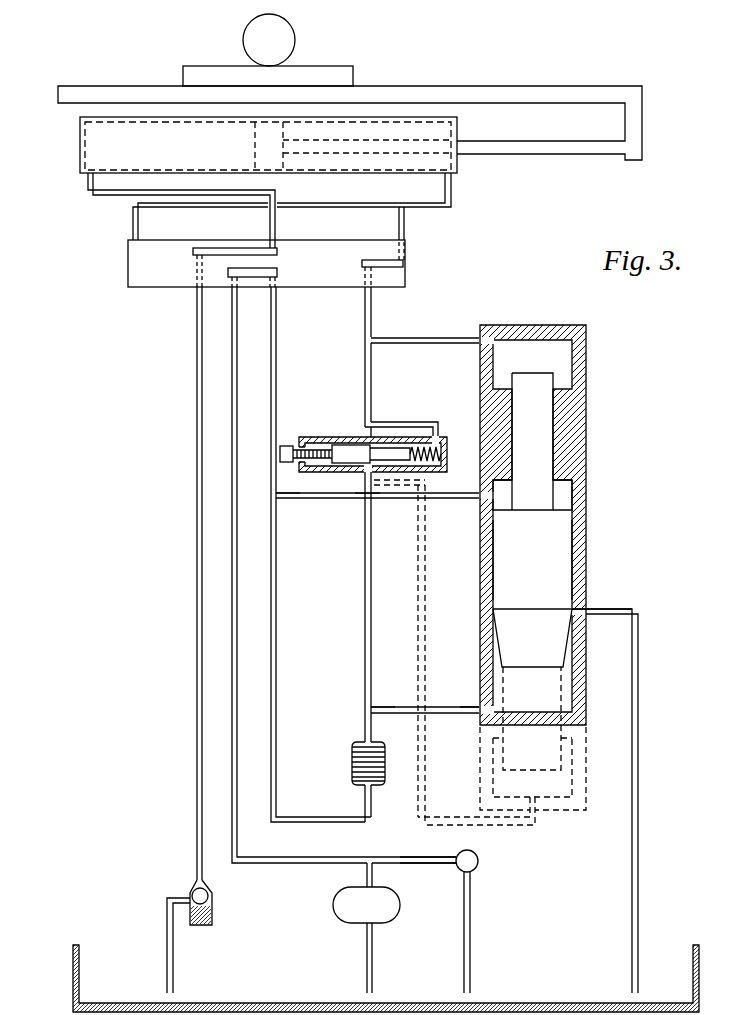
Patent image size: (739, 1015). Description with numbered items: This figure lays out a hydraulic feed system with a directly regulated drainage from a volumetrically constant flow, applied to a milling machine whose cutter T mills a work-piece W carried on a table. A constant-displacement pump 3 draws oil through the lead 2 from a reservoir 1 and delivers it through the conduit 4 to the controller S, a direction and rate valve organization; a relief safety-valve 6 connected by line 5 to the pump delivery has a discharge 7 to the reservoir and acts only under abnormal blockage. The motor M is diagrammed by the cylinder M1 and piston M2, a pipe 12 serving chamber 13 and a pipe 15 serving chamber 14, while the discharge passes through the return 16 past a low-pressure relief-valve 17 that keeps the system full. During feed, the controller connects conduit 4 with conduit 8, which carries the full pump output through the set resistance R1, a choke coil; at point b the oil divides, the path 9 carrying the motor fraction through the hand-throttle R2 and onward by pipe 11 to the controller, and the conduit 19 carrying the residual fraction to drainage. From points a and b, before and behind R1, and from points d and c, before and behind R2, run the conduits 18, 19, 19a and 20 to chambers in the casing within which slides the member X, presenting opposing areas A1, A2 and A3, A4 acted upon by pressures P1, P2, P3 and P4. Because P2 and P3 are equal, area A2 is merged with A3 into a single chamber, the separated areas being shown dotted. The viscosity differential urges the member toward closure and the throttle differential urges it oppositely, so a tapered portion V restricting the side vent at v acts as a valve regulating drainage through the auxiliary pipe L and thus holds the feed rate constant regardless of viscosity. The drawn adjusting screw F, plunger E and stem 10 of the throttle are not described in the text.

The cutter T is at (294, 34).
The work-piece W is at (357, 70).
The cylinder M1 is at (78, 131).
The motor M is at (70, 161).
The chamber 14 is at (190, 146).
The piston M2 is at (271, 138).
The chamber 13 is at (343, 163).
The pipe 15 is at (103, 197).
The pipe 12 is at (418, 209).
The controller S is at (126, 263).
The return 16 is at (195, 332).
The conduit 4 is at (230, 538).
The conduit 8 is at (278, 393).
The pressure P1 is at (287, 712).
The point a is at (277, 497).
The point d is at (363, 490).
The pipe 11 is at (364, 305).
The point c is at (372, 337).
The conduit 20 is at (453, 342).
The pressure P4 is at (431, 425).
The throttle R2 is at (352, 433).
The adjusting screw F is at (297, 447).
The valve piston E is at (351, 456).
The valve stem 10 is at (375, 470).
The pressure P3 is at (364, 478).
The conduit 18 is at (408, 500).
The conduit 19a is at (431, 585).
The path 9 is at (362, 560).
The set resistance R1 is at (388, 766).
The pressure P2 is at (420, 717).
The point b is at (376, 716).
The conduit 19 is at (444, 718).
The valve V is at (567, 645).
The member X is at (532, 560).
The area A4 is at (548, 376).
The area A1 is at (503, 509).
The side vent v is at (586, 599).
The area A2 is at (497, 683).
The area A3 is at (540, 771).
The auxiliary pipe L is at (638, 743).
The line 5 is at (440, 858).
The relief safety-valve 6 is at (478, 857).
The discharge 7 is at (473, 906).
The constant-displacement pump 3 is at (332, 901).
The lead 2 is at (375, 954).
The relief-valve 17 is at (213, 905).
The reservoir 1 is at (80, 996).